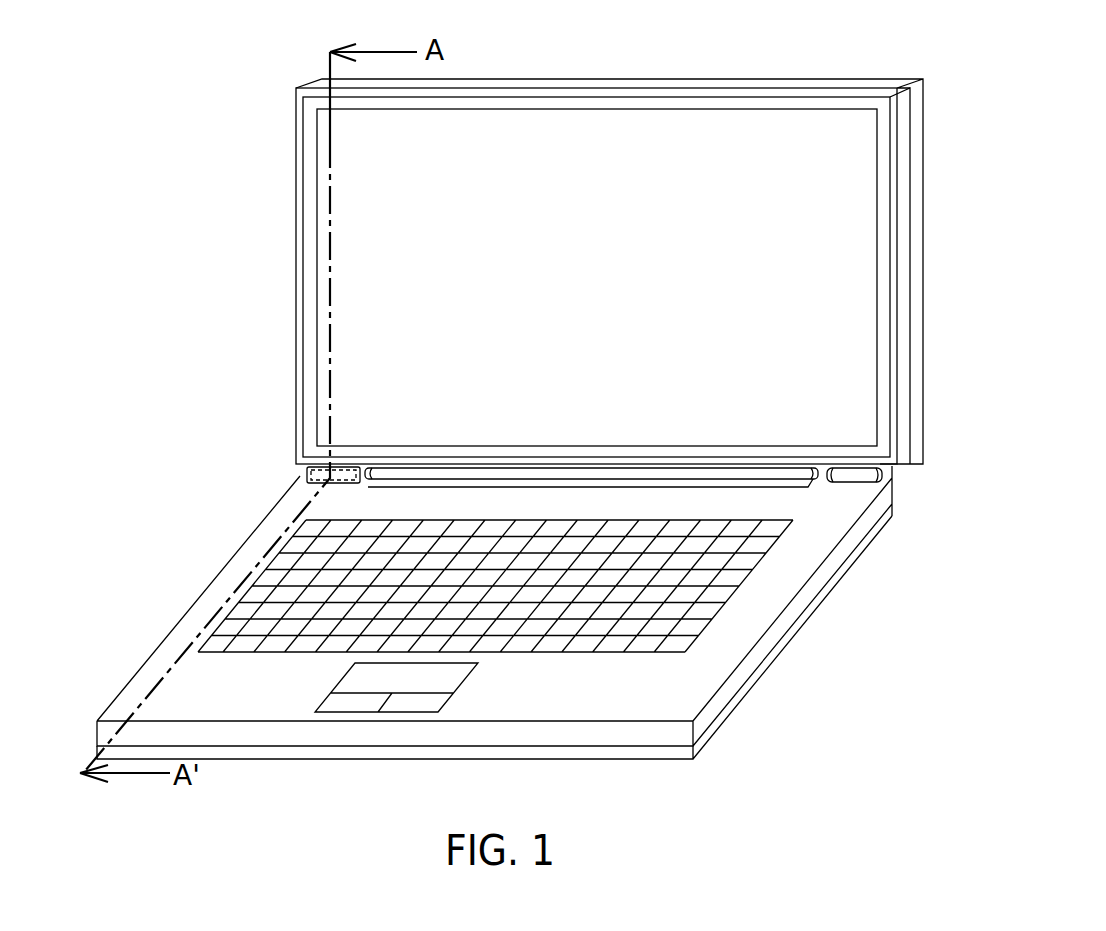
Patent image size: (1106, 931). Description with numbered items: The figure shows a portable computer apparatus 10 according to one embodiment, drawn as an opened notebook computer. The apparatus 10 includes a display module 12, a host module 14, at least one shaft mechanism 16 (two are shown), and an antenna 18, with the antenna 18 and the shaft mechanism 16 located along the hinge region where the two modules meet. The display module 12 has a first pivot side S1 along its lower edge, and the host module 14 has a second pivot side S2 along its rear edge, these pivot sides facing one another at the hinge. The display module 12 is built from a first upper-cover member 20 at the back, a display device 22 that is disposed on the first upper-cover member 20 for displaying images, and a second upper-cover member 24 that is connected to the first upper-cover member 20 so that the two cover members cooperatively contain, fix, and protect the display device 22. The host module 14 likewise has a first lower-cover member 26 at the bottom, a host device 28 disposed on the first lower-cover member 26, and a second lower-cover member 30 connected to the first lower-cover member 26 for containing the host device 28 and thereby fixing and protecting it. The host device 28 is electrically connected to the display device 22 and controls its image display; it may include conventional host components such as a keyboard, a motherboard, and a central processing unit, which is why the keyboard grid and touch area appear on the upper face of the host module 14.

The portable computer apparatus 10 is at (969, 110).
The display module 12 is at (995, 228).
The host module 14 is at (905, 608).
The shaft mechanism 16 is at (278, 473).
The antenna 18 is at (313, 482).
The first upper-cover member 20 is at (920, 263).
The display device 22 is at (840, 294).
The second upper-cover member 24 is at (902, 343).
The first lower-cover member 26 is at (733, 705).
The host device 28 is at (763, 610).
The second lower-cover member 30 is at (695, 628).
The first pivot side S1 is at (898, 461).
The second pivot side S2 is at (895, 484).